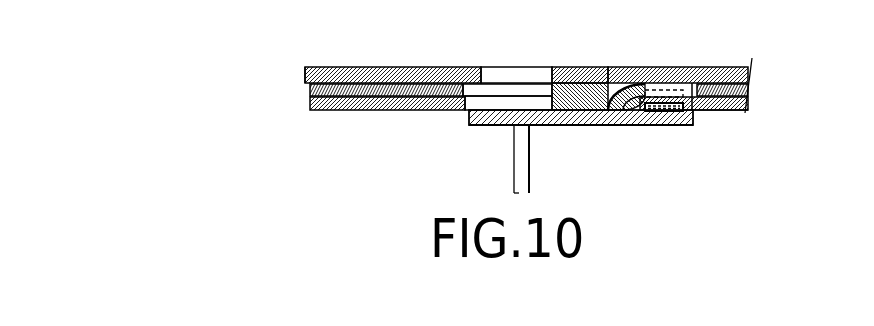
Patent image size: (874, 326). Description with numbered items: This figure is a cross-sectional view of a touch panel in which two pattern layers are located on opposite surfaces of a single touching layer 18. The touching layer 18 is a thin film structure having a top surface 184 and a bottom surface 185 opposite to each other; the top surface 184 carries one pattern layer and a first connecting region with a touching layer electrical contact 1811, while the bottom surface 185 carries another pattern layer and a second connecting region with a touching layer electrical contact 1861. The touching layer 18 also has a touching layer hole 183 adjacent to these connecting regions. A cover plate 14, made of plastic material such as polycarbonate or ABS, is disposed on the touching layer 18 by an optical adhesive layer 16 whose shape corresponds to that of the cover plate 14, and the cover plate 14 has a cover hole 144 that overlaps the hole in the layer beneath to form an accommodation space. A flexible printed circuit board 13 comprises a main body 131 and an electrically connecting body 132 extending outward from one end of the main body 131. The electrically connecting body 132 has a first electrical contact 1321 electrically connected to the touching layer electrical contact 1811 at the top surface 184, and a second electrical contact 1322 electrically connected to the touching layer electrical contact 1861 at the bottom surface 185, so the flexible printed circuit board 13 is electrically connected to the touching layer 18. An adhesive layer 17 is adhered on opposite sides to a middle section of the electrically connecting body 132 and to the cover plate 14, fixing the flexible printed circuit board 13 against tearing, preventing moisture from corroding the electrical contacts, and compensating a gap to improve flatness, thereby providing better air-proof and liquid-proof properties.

The flexible printed circuit board 13 is at (476, 145).
The main body 131 is at (513, 183).
The electrically connecting body 132 is at (558, 127).
The first electrical contact 1321 is at (669, 67).
The second electrical contact 1322 is at (670, 127).
The cover plate 14 is at (296, 74).
The cover hole 144 is at (537, 70).
The optical adhesive layer 16 is at (310, 86).
The adhesive layer 17 is at (573, 72).
The touching layer 18 is at (298, 105).
The touching layer hole 183 is at (503, 108).
The top surface 184 is at (747, 94).
The bottom surface 185 is at (732, 112).
The touching layer electrical contact 1811 is at (708, 112).
The touching layer electrical contact 1861 is at (627, 128).